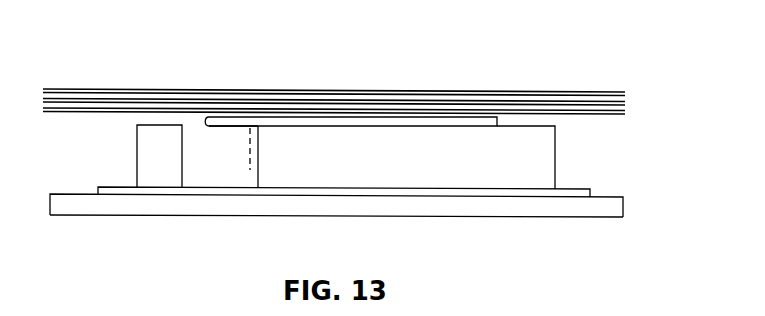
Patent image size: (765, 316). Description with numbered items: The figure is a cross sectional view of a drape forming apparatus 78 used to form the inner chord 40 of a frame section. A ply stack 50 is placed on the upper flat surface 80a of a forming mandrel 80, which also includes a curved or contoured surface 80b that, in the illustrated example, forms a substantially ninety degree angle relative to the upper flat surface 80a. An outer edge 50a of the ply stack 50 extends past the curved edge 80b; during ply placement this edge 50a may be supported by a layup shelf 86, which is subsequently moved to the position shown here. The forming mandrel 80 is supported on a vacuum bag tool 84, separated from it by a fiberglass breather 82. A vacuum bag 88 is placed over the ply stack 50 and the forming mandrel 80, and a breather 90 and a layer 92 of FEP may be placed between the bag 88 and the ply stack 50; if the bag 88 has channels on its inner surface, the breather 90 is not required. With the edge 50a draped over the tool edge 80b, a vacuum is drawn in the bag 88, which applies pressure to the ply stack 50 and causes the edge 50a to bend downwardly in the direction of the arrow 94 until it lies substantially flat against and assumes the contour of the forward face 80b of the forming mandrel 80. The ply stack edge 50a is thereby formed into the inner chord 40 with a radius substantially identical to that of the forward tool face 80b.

The inner chord 40 is at (234, 156).
The ply stack 50 is at (245, 125).
The outer edge 50a is at (212, 108).
The flexible cable assembly 78 is at (477, 56).
The forming mandrel 80 is at (518, 175).
The upper flat surface 80a is at (531, 116).
The contoured surface 80b is at (250, 180).
The fiberglass breather 82 is at (460, 192).
The vacuum bag tool 84 is at (388, 207).
The layup shelf 86 is at (158, 178).
The vacuum bag 88 is at (395, 100).
The breather 90 is at (353, 102).
The layer of FEP 92 is at (318, 108).
The arrow 94 is at (222, 130).